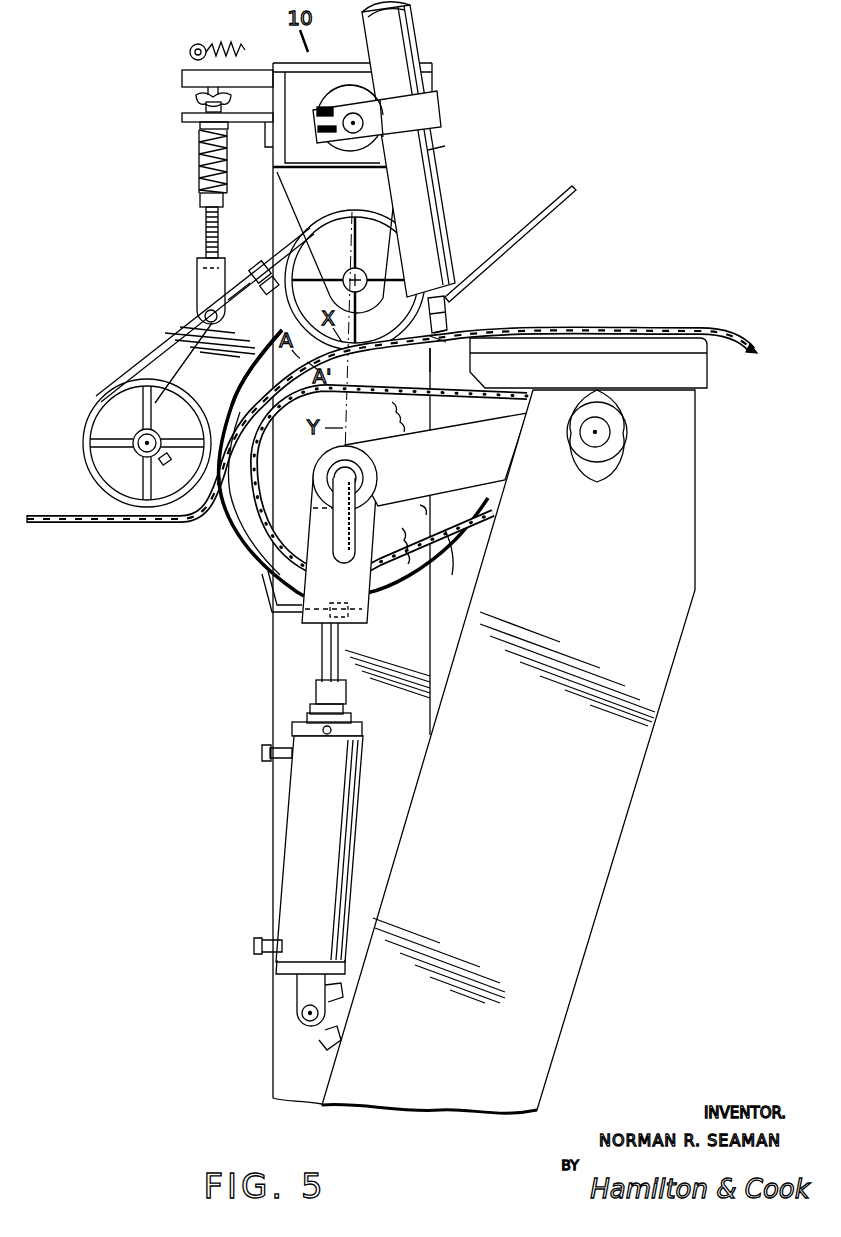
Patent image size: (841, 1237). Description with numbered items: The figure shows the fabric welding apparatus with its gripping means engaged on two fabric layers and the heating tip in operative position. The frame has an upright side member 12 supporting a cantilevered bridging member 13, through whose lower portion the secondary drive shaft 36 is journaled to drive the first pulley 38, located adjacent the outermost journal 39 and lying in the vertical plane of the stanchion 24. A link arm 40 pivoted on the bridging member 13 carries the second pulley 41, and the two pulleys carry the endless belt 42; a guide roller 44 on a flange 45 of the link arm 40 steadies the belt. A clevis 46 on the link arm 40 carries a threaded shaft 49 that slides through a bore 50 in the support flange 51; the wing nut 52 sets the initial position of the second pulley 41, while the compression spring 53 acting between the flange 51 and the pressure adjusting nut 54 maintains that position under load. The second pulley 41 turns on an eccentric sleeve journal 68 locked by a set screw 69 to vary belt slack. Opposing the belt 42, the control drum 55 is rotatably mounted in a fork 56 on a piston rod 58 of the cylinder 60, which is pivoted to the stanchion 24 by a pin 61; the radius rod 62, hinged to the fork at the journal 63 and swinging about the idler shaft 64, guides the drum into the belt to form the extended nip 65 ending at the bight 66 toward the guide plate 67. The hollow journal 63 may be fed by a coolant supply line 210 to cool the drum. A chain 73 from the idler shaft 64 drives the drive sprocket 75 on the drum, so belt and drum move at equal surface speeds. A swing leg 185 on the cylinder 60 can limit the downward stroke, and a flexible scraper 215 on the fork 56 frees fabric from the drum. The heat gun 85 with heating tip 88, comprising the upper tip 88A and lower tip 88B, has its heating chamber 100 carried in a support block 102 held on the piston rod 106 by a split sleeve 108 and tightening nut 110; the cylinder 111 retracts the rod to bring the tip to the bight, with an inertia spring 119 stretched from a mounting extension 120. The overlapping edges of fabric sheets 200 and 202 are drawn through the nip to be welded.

The side member 12 is at (282, 655).
The bridging member 13 is at (432, 73).
The stanchion 24 is at (508, 751).
The secondary drive shaft 36 is at (356, 269).
The first pulley 38 is at (292, 254).
The outermost journal 39 is at (337, 242).
The link arm 40 is at (186, 313).
The second pulley 41 is at (100, 408).
The endless belt 42 is at (140, 372).
The guide roller 44 is at (258, 266).
The flange 45 is at (270, 291).
The clevis 46 is at (200, 266).
The threaded shaft 49 is at (206, 223).
The bore 50 is at (228, 126).
The support flange 51 is at (182, 118).
The wing nut 52 is at (196, 99).
The helical compression spring 53 is at (199, 155).
The pressure adjusting nut 54 is at (200, 201).
The control drum 55 is at (250, 543).
The fork 56 is at (360, 603).
The piston rod 58 is at (340, 652).
The cylinder 60 is at (356, 766).
The pin 61 is at (300, 1013).
The radius rod 62 is at (436, 459).
The journal 63 is at (364, 470).
The idler shaft 64 is at (600, 432).
The extended nip 65 is at (233, 395).
The bight 66 is at (430, 353).
The guide plate 67 is at (513, 340).
The eccentric sleeve journal 68 is at (134, 452).
The set screw 69 is at (168, 466).
The chain 73 is at (492, 519).
The drive sprocket 75 is at (442, 548).
The heat gun 85 is at (443, 153).
The heating tip 88 is at (424, 341).
The upper gun tip 88A is at (452, 308).
The lower gun tip 88B is at (458, 326).
The heating chamber 100 is at (446, 193).
The support block 102 is at (441, 112).
The piston rod 106 is at (355, 134).
The split sleeve 108 is at (352, 112).
The tightening nut 110 is at (326, 110).
The cylinder 111 is at (347, 87).
The inertia spring 119 is at (245, 49).
The mounting extension 120 is at (182, 78).
The swing leg 185 is at (346, 689).
The fabric sheet 200 is at (560, 205).
The fabric sheet 202 is at (664, 329).
The coolant supply line 210 is at (326, 532).
The flexible scraper 215 is at (263, 582).